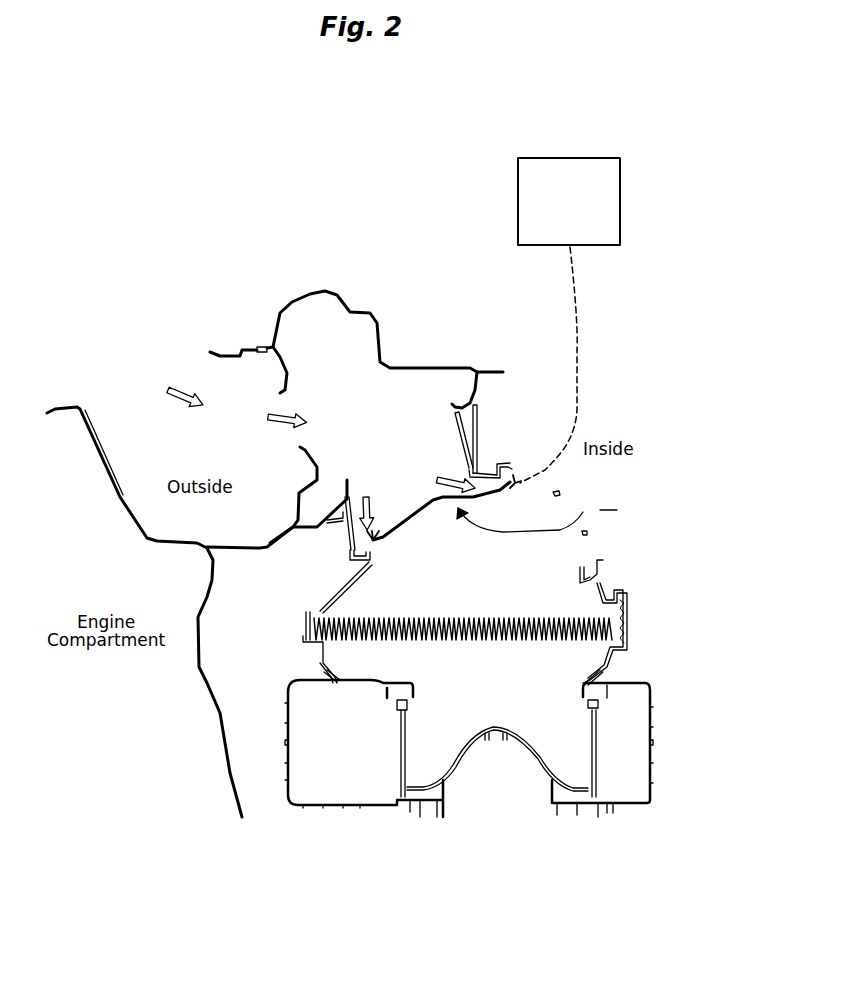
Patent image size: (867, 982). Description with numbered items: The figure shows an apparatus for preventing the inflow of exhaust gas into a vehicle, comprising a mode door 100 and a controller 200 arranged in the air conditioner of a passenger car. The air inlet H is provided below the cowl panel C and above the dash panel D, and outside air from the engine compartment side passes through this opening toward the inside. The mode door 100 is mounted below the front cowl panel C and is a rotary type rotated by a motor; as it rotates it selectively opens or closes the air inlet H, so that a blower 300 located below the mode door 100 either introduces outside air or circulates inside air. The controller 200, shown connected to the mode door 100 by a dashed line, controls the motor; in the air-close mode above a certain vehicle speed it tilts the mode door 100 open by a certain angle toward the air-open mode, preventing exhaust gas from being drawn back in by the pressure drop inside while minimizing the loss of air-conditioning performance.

The mode door 100 is at (566, 517).
The controller 200 is at (569, 320).
The blower 300 is at (493, 748).
The cowl panel C is at (430, 362).
The air inlet H is at (410, 447).
The dash panel D is at (222, 733).